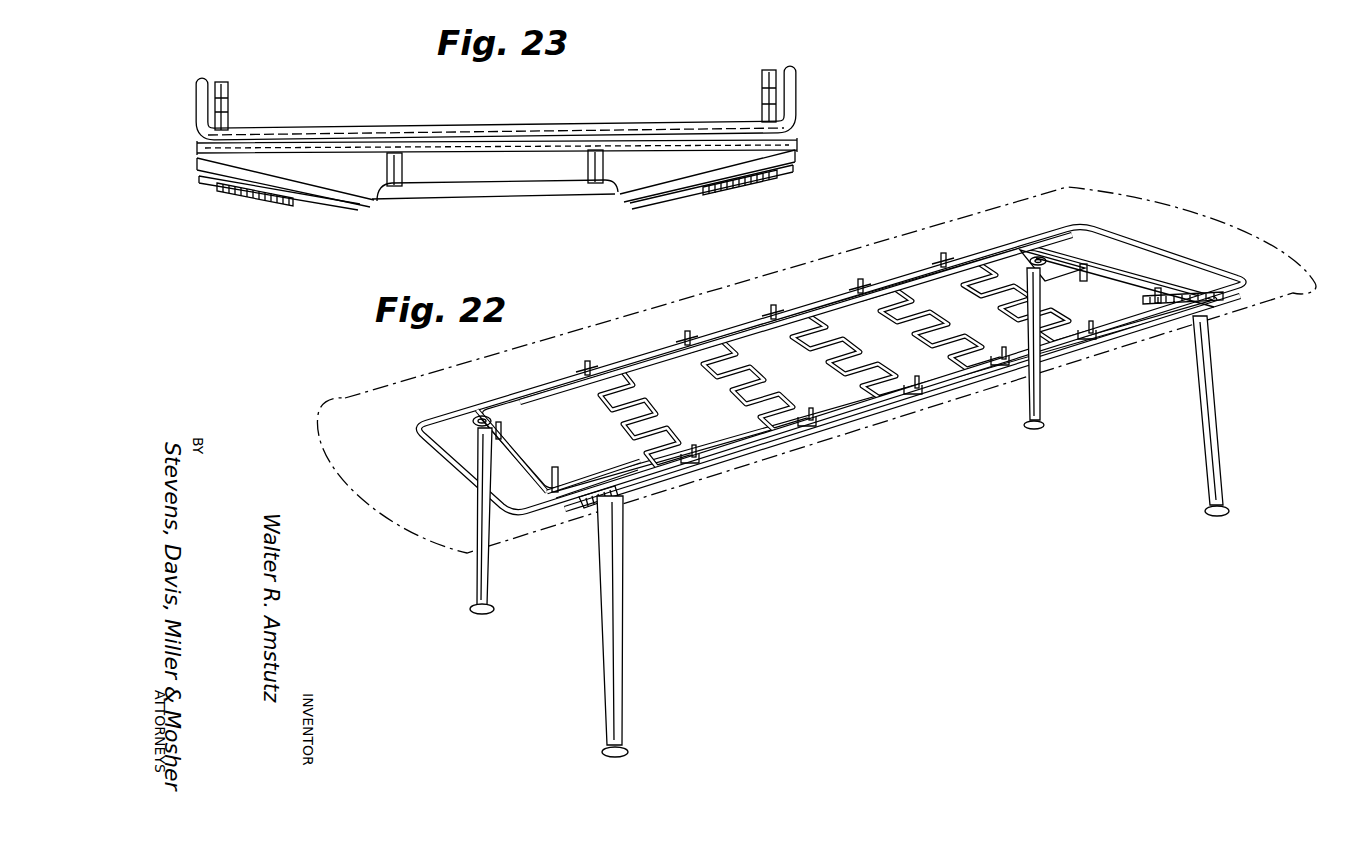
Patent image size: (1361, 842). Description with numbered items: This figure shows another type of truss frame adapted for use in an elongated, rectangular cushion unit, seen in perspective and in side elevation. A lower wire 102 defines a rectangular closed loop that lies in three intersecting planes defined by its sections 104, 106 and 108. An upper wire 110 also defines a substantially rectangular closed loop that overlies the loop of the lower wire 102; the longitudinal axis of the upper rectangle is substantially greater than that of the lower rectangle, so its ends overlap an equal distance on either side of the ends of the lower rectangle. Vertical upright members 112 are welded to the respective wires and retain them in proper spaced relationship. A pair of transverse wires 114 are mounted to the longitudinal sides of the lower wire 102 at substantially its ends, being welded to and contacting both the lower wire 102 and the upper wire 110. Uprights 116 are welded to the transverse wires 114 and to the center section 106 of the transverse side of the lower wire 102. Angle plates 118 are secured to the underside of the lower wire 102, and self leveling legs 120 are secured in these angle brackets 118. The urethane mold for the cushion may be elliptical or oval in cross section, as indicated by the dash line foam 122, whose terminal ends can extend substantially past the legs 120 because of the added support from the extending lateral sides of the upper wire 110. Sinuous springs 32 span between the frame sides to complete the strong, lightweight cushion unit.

In FIG. 22, the sinuous spring 32 is at (742, 390).
In FIG. 23, the lower wire 102 is at (799, 146).
In FIG. 22, the lower wire 102 is at (874, 412).
In FIG. 23, the section 104 is at (270, 174).
In FIG. 22, the section 104 is at (462, 420).
In FIG. 23, the center section 106 is at (459, 186).
In FIG. 22, the center section 106 is at (530, 504).
In FIG. 23, the section 108 is at (730, 164).
In FIG. 22, the section 108 is at (575, 509).
In FIG. 23, the upper wire 110 is at (200, 80).
In FIG. 22, the upper wire 110 is at (713, 327).
In FIG. 23, the vertical upright members 112 is at (230, 98).
In FIG. 22, the vertical upright members 112 is at (700, 339).
In FIG. 23, the transverse rods or wires 114 is at (532, 147).
In FIG. 22, the transverse rods or wires 114 is at (575, 483).
In FIG. 23, the uprights 116 is at (390, 166).
In FIG. 22, the uprights 116 is at (502, 446).
In FIG. 23, the angle plates 118 is at (201, 180).
In FIG. 22, the angle plates 118 is at (506, 418).
In FIG. 22, the self leveling legs 120 is at (478, 582).
In FIG. 22, the foam 122 is at (362, 406).